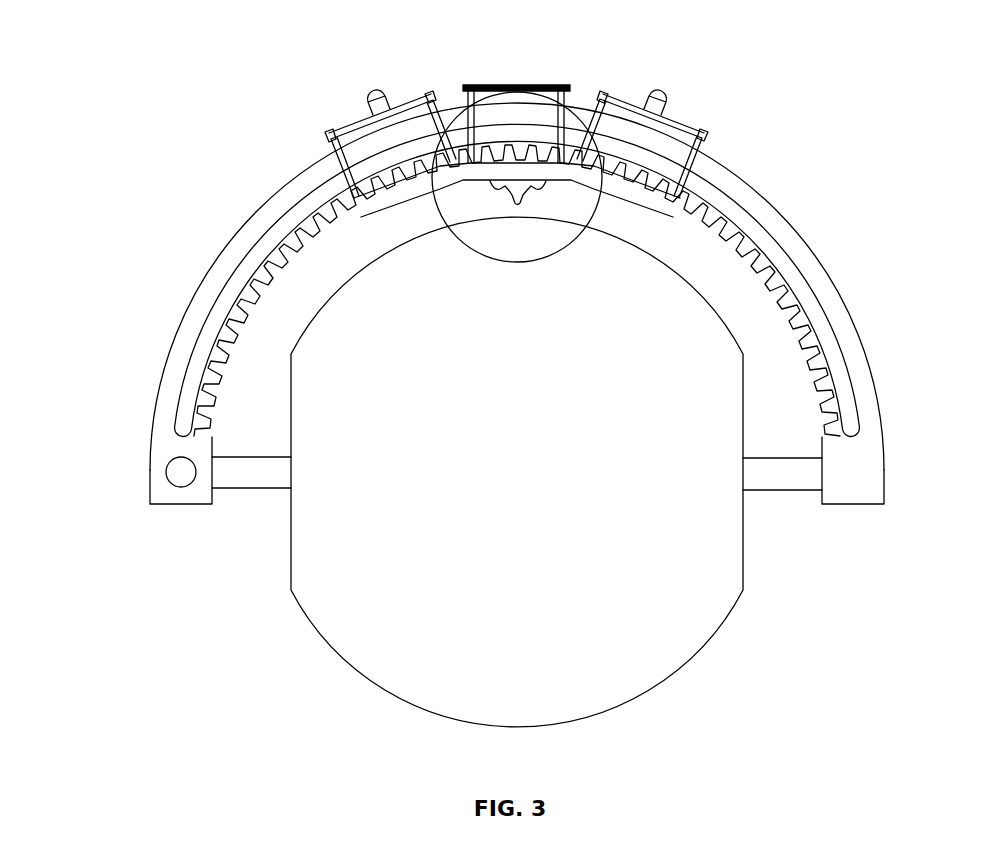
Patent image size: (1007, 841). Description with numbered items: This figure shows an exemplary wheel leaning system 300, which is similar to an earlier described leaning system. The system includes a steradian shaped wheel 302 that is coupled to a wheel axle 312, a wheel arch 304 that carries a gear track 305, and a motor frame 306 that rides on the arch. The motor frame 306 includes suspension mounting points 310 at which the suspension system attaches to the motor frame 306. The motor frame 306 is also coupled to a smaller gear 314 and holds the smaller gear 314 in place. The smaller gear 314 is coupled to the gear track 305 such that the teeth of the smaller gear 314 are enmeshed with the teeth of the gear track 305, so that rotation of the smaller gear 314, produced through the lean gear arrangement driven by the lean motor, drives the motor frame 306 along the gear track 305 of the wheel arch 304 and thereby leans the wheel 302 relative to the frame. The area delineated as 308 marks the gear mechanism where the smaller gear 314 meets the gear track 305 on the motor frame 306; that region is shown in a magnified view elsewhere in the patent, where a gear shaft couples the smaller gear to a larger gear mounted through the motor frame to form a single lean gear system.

The wheel leaning system 300 is at (802, 66).
The steradian shaped wheel 302 is at (700, 648).
The wheel arch 304 is at (180, 306).
The gear track 305 is at (264, 254).
The motor frame 306 is at (345, 128).
The area delineated for magnified view 308 is at (458, 112).
The suspension mounting points 310 is at (661, 93).
The wheel axle 312 is at (776, 491).
The smaller gear 314 is at (548, 196).